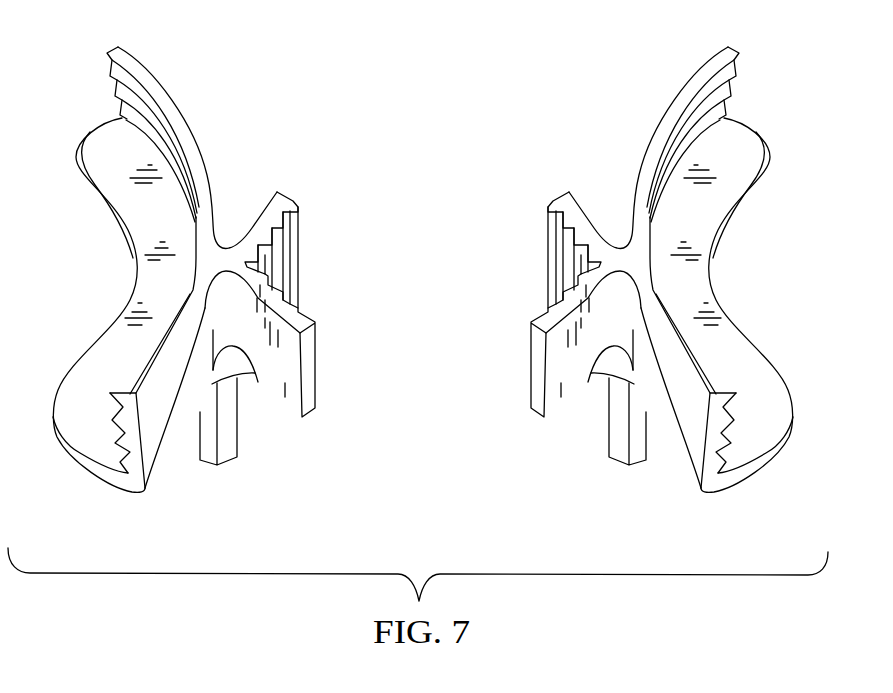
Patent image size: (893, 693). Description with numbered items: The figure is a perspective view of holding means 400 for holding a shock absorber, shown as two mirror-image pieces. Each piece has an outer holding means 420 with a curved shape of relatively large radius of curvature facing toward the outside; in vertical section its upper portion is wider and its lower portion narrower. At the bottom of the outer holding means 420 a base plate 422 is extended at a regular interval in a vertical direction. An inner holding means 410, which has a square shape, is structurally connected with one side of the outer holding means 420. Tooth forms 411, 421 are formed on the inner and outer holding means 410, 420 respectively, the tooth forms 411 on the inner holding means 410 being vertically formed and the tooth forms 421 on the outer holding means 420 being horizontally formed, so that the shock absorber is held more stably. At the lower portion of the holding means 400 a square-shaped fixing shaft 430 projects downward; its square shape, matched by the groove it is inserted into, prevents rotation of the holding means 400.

The holding means 400 is at (666, 278).
The inner holding means 410 is at (555, 397).
The tooth forms 411 is at (556, 259).
The outer holding means 420 is at (735, 357).
The tooth forms 421 is at (722, 448).
The base plate 422 is at (758, 437).
The fixing shaft 430 is at (620, 465).